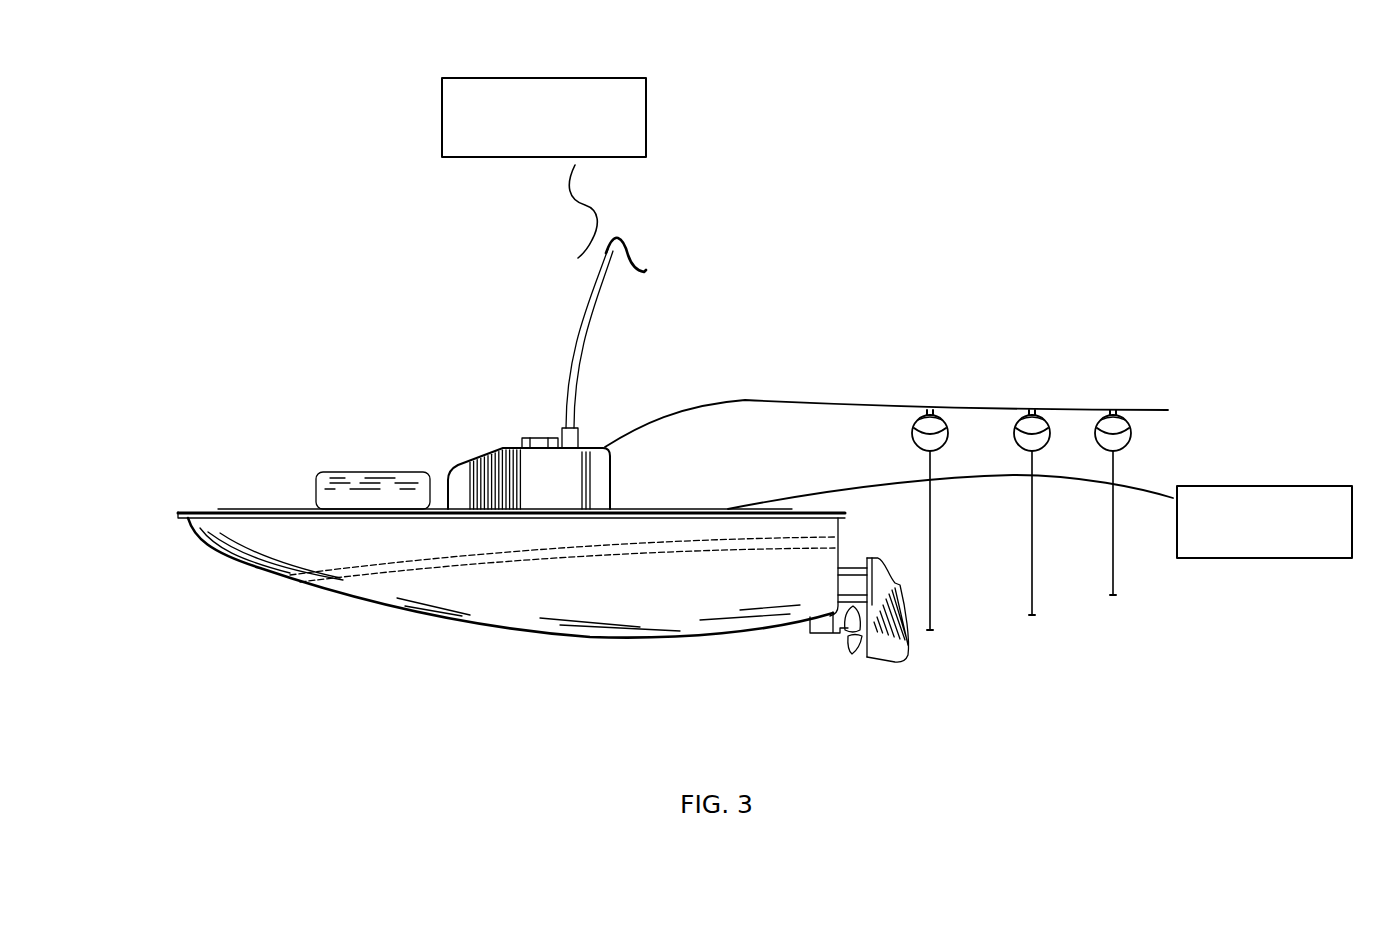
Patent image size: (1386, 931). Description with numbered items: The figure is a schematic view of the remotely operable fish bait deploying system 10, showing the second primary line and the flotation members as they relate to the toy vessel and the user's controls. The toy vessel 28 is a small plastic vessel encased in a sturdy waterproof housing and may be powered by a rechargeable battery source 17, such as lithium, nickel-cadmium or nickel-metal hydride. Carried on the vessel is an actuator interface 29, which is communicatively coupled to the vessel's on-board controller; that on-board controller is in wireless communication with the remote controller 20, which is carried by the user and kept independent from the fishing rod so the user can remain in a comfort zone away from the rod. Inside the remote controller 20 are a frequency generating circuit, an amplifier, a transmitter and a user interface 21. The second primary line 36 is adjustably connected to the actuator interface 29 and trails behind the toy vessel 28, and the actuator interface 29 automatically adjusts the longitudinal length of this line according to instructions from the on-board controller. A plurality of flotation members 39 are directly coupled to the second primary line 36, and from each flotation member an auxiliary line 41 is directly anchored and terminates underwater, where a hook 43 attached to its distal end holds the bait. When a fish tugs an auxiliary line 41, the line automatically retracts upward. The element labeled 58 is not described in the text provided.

The fish bait deploying system 10 is at (776, 154).
The rechargeable battery source 17 is at (355, 472).
The remote controller 20 is at (498, 157).
The user interface 21 is at (1238, 492).
The toy vessel 28 is at (258, 512).
The actuator interface 29 is at (462, 468).
The second primary line 36 is at (752, 400).
The flotation members 39 is at (937, 415).
The auxiliary lines 41 is at (930, 577).
The hooks 43 is at (930, 630).
The antenna 58 is at (627, 245).